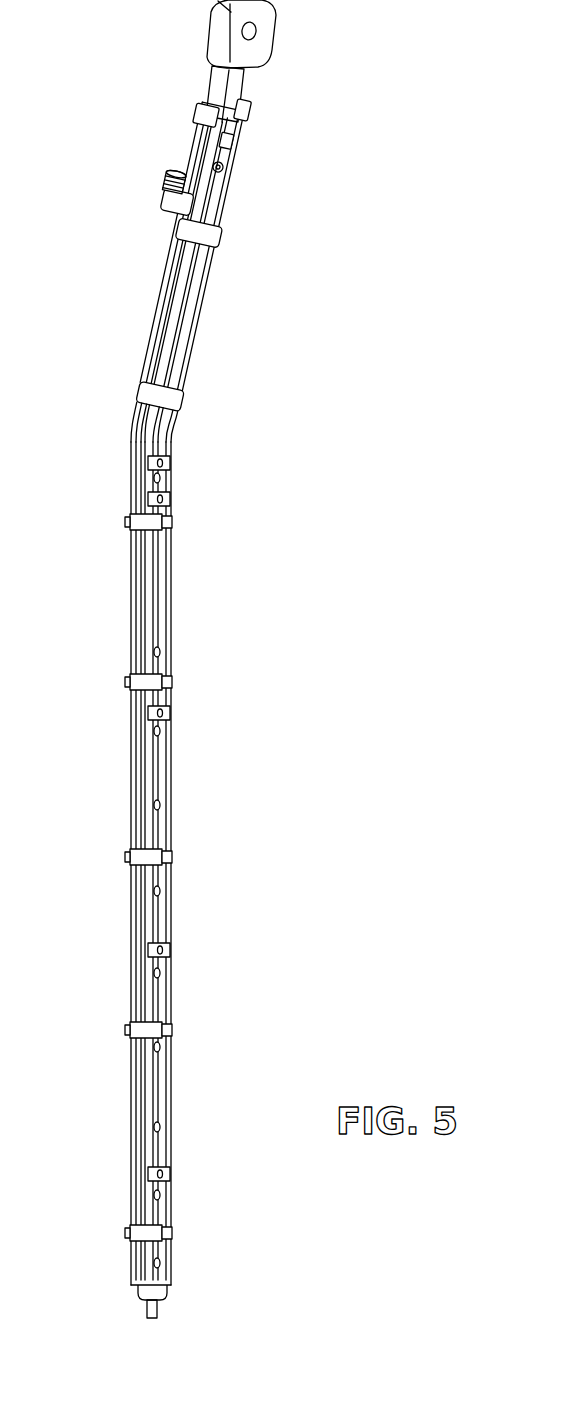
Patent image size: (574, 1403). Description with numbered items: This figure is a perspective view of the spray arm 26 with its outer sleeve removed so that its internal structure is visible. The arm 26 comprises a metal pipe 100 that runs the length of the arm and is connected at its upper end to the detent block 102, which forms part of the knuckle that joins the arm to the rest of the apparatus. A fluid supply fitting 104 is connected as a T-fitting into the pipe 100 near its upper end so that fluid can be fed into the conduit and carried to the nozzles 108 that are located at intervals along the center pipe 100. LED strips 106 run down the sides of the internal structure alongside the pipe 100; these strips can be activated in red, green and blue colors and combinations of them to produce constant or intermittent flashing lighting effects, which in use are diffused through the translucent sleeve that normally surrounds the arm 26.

The spray arm 26 is at (193, 659).
The metal pipe 100 is at (211, 238).
The detent block 102 is at (215, 40).
The fluid supply fitting 104 is at (178, 192).
The LED strips 106 is at (161, 880).
The nozzles 108 is at (162, 652).